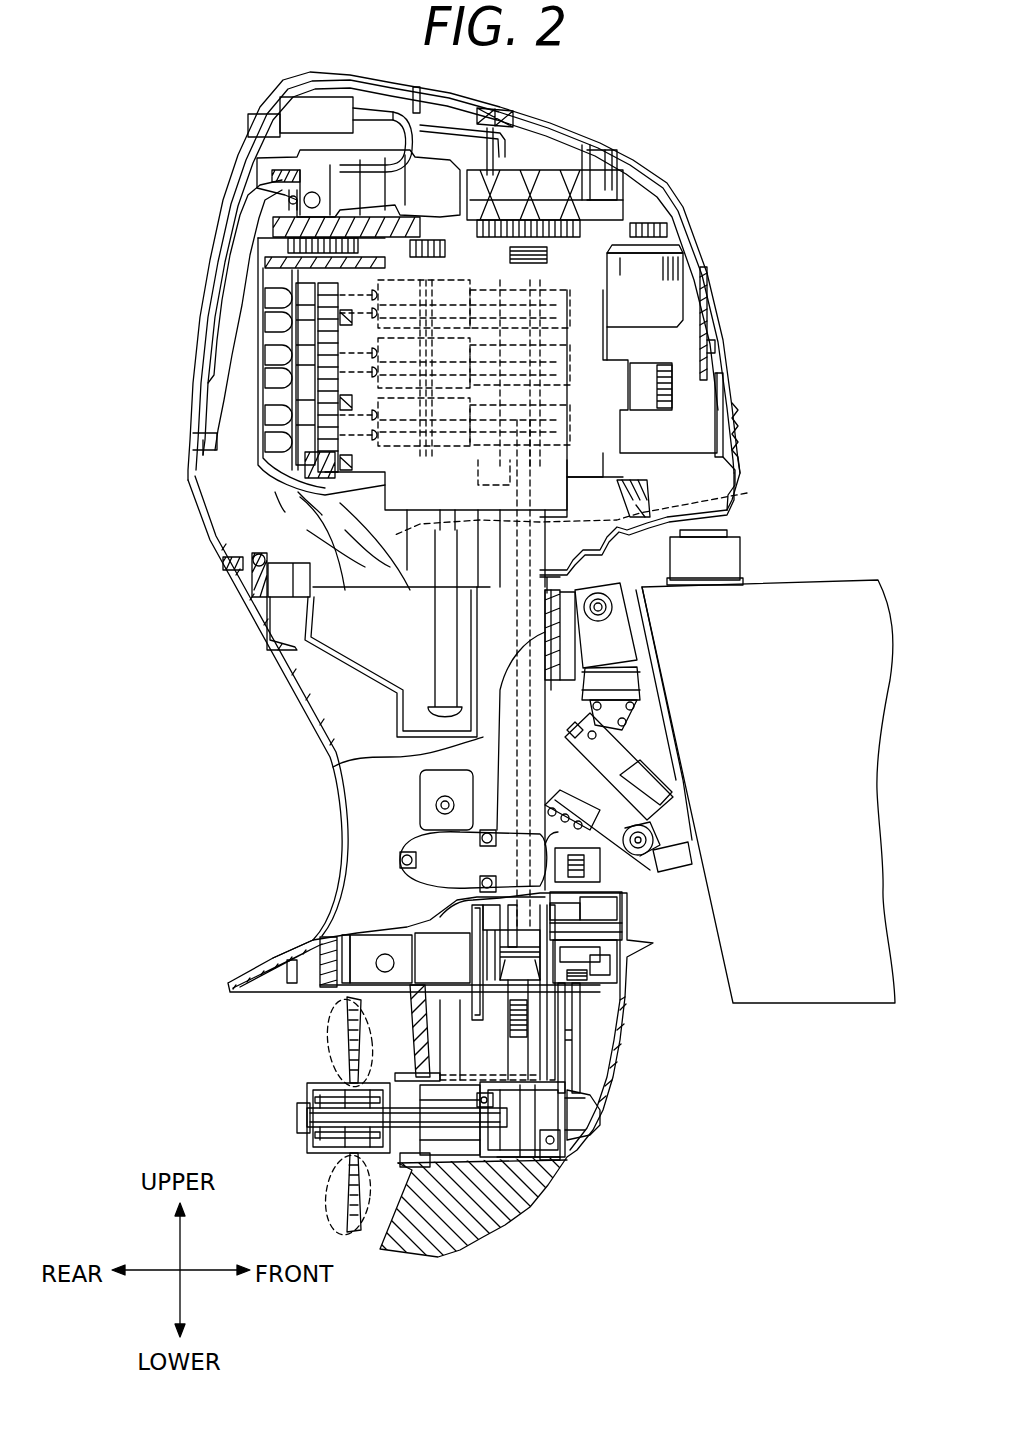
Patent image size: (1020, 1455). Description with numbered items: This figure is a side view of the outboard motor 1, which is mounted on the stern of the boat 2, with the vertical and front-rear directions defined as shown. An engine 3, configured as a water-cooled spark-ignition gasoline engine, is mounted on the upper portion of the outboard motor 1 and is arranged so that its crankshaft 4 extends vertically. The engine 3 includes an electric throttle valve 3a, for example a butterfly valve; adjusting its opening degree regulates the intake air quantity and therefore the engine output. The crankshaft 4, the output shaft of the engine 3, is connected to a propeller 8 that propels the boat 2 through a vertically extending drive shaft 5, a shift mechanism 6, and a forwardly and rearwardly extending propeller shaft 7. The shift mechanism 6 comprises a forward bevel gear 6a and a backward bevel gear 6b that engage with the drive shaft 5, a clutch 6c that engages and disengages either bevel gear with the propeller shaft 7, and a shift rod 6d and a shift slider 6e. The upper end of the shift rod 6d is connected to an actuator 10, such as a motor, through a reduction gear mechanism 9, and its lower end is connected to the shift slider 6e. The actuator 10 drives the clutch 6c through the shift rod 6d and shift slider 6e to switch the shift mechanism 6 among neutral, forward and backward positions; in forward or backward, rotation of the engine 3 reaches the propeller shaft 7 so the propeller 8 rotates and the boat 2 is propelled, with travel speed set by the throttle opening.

The outboard motor 1 is at (782, 183).
The boat 2 is at (866, 570).
The engine 3 is at (678, 336).
The throttle valve 3a is at (292, 198).
The crankshaft 4 is at (747, 493).
The drive shaft 5 is at (517, 935).
The shift mechanism 6 is at (640, 1200).
The forward bevel gear 6a is at (537, 1143).
The backward bevel gear 6b is at (515, 1140).
The clutch 6c is at (538, 1140).
The shift rod 6d is at (573, 1020).
The shift slider 6e is at (553, 1122).
The propeller shaft 7 is at (457, 1127).
The propeller 8 is at (353, 1050).
The reduction gear mechanism 9 is at (593, 978).
The actuator 10 is at (605, 911).